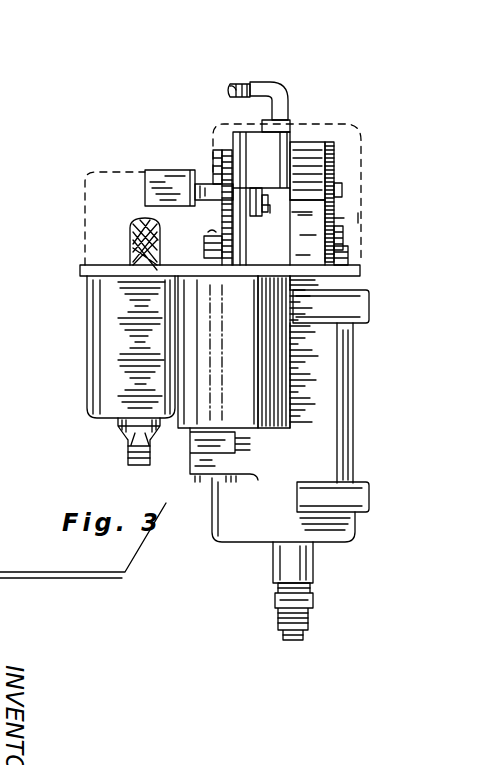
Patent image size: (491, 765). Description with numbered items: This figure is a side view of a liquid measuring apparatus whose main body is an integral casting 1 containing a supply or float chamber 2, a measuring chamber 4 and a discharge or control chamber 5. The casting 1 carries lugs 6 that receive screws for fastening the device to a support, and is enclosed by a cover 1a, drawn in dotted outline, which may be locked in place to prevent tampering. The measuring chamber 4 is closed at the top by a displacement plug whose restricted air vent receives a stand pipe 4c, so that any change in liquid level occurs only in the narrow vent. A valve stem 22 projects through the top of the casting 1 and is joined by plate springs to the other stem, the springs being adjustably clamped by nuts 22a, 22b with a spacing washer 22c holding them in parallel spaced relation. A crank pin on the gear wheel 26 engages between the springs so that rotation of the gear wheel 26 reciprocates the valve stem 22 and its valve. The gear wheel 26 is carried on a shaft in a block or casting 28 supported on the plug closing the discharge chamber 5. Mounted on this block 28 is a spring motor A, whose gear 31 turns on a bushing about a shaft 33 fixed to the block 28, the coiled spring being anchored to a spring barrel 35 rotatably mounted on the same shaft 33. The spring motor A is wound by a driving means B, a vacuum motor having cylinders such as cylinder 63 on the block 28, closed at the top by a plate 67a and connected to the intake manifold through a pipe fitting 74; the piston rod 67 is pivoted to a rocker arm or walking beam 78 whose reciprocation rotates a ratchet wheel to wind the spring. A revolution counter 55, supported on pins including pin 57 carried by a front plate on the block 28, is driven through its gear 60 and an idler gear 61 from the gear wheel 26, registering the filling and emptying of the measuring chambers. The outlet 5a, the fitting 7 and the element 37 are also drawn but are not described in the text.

The main body casting 1 is at (349, 270).
The cover 1a is at (339, 135).
The supply or float chamber 2 is at (114, 392).
The measuring chamber 4 is at (266, 360).
The stand pipe 4c is at (236, 262).
The discharge or control chamber 5 is at (342, 447).
The outlet fitting 5a is at (306, 618).
The lugs 6 is at (369, 306).
The drain fitting 7 is at (128, 442).
The valve stem 22 is at (207, 265).
The nut 22a is at (203, 244).
The nut 22b is at (203, 258).
The spacing washer or disk 22c is at (128, 244).
The gear wheel or crank gear 26 is at (218, 378).
The block or casting 28 is at (348, 255).
The gear 31 is at (332, 147).
The shaft 33 is at (342, 190).
The spring barrel 35 is at (344, 218).
The gear 37 is at (343, 240).
The revolution counter 55 is at (160, 183).
The pin 57 is at (212, 188).
The gear 60 is at (225, 166).
The idler gear 61 is at (212, 235).
The cylinder 63 is at (270, 150).
The piston rod 67 is at (268, 196).
The plate 67a is at (247, 130).
The pipe fitting 74 is at (258, 92).
The rocker arm or walking beam 78 is at (306, 216).
The spring motor A is at (270, 207).
The driving means B is at (268, 153).